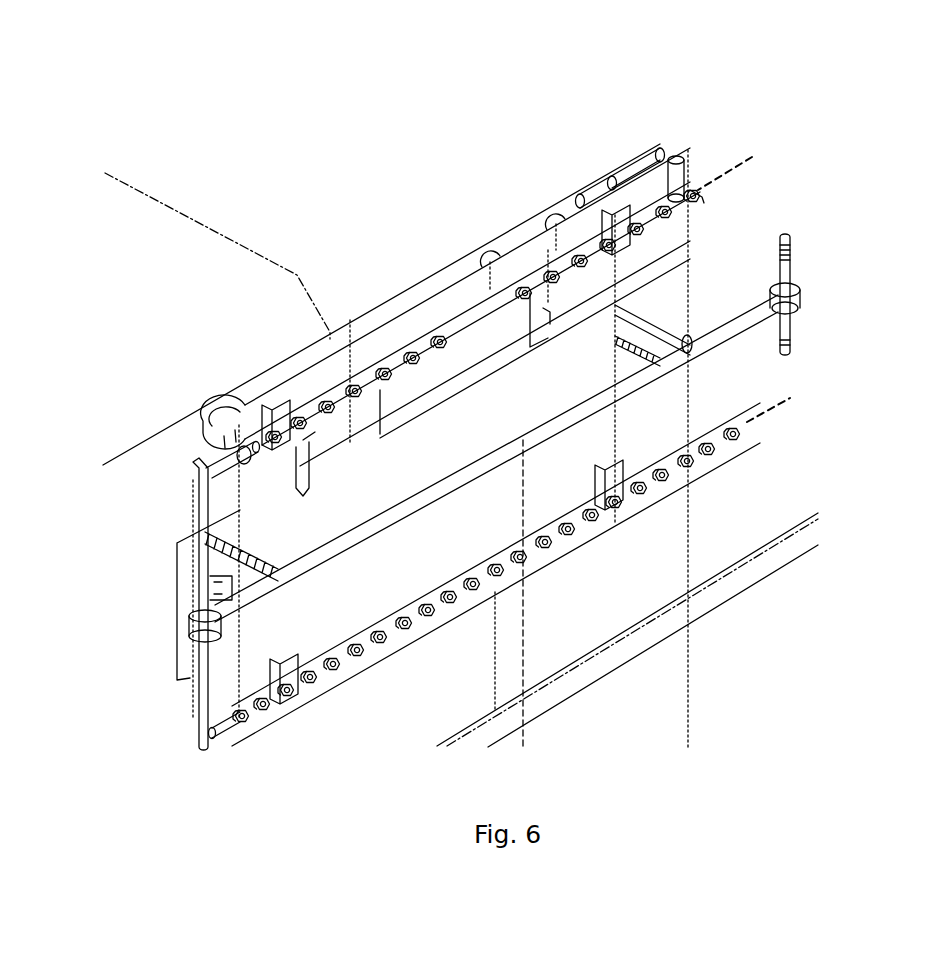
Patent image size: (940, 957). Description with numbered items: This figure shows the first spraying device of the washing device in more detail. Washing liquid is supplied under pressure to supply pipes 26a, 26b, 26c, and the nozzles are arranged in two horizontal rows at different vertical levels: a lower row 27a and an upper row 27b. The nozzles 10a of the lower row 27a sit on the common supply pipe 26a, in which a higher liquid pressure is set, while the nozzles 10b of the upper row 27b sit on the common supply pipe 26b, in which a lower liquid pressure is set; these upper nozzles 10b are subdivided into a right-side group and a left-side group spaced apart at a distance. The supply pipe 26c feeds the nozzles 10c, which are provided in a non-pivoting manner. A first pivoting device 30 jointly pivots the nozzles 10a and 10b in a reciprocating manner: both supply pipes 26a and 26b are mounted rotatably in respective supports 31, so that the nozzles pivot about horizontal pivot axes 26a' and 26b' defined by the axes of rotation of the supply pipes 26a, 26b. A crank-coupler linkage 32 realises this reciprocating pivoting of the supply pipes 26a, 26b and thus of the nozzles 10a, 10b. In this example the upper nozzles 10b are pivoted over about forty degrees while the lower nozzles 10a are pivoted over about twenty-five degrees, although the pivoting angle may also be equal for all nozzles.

The nozzles 10a is at (689, 462).
The nozzles 10b is at (442, 340).
The nozzles 10c is at (792, 253).
The supply pipe 26a is at (807, 392).
The horizontal pivot axis 26a' is at (828, 434).
The supply pipe 26b is at (601, 162).
The horizontal pivot axis 26b' is at (750, 134).
The supply pipe 26c is at (758, 305).
The lower row of nozzles 27a is at (187, 743).
The upper row of nozzles 27b is at (182, 489).
The first pivoting device 30 is at (191, 456).
The supports 31 is at (613, 227).
The crank-coupler linkage 32 is at (219, 489).